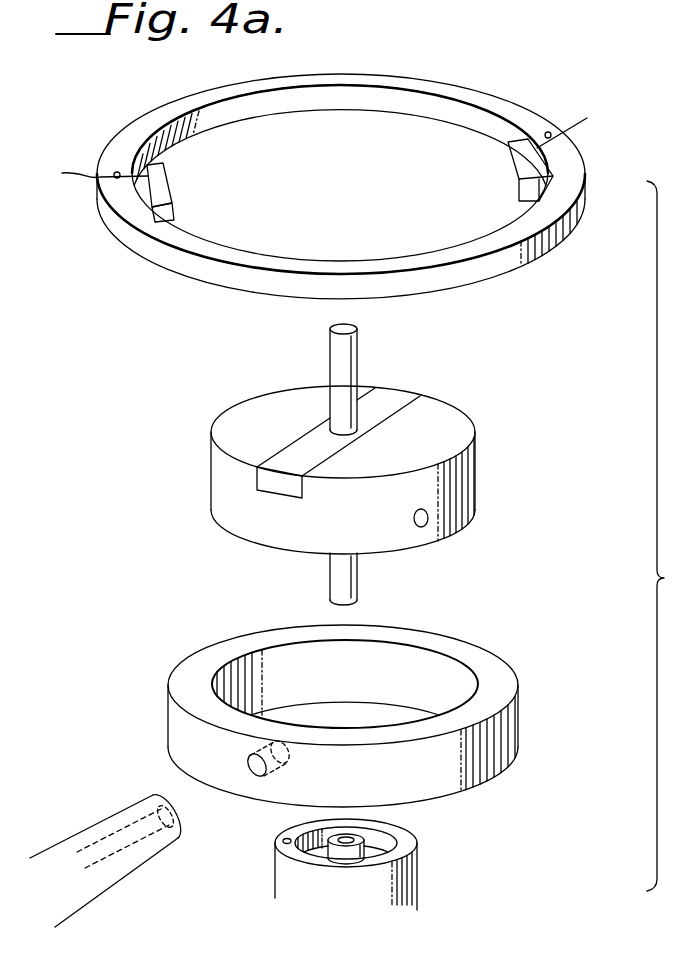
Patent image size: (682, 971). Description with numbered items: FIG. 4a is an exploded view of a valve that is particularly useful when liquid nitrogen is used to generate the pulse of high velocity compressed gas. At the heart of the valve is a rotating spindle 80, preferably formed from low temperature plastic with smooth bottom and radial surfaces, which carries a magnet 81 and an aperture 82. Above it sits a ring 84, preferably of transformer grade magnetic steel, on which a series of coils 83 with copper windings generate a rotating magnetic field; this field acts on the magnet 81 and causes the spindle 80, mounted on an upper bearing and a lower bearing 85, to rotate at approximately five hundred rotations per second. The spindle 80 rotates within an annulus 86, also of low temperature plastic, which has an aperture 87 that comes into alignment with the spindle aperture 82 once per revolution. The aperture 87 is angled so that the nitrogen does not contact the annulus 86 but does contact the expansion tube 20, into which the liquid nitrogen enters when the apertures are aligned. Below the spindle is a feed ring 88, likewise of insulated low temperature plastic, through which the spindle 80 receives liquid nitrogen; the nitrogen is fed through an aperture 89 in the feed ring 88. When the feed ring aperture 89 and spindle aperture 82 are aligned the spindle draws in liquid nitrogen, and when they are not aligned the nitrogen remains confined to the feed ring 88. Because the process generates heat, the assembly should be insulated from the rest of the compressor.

The expansion tube 20 is at (110, 816).
The rotating spindle 80 is at (196, 440).
The magnet 81 is at (408, 392).
The aperture 82 is at (425, 527).
The coils 83 is at (174, 212).
The ring 84 is at (580, 163).
The lower bearing 85 is at (358, 837).
The annulus 86 is at (197, 650).
The aperture 87 is at (248, 758).
The feed ring 88 is at (419, 838).
The aperture 89 is at (283, 840).